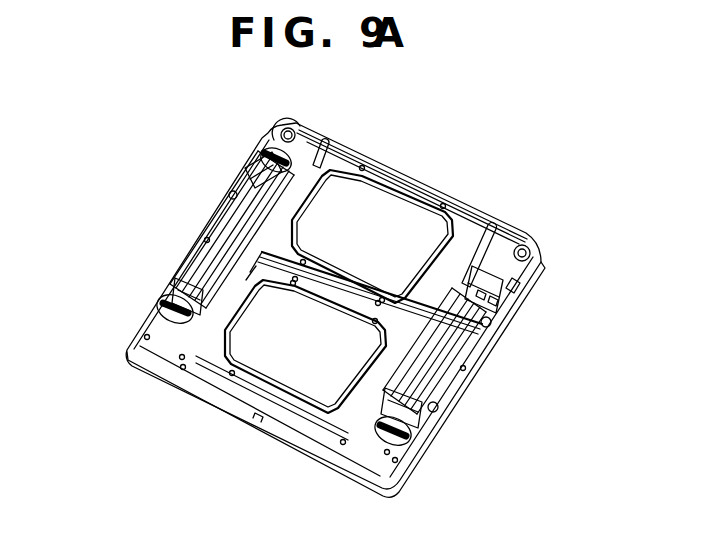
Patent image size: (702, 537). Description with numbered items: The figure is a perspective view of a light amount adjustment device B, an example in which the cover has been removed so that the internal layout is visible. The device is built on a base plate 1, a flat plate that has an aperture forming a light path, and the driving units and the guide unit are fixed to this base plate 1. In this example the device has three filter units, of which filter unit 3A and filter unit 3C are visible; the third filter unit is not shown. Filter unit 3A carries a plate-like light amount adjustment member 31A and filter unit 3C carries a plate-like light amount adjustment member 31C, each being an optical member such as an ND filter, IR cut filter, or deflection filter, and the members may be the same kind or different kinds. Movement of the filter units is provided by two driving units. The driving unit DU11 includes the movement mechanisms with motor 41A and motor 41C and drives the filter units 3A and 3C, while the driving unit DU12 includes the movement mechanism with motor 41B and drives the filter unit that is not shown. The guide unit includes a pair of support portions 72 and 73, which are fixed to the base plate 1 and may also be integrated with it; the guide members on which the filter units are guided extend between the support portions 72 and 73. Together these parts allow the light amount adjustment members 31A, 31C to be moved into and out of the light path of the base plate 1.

The base plate 1 is at (153, 372).
The filter unit 3A is at (334, 410).
The filter unit 3C is at (398, 194).
The light amount adjustment member 31A is at (322, 359).
The light amount adjustment member 31C is at (388, 239).
The motor 41A is at (273, 152).
The motor 41B is at (407, 443).
The motor 41C is at (160, 296).
The support portion 72 is at (487, 210).
The support portion 73 is at (205, 378).
The driving unit DU11 is at (200, 218).
The driving unit DU12 is at (462, 379).
The light amount adjustment device B is at (83, 141).